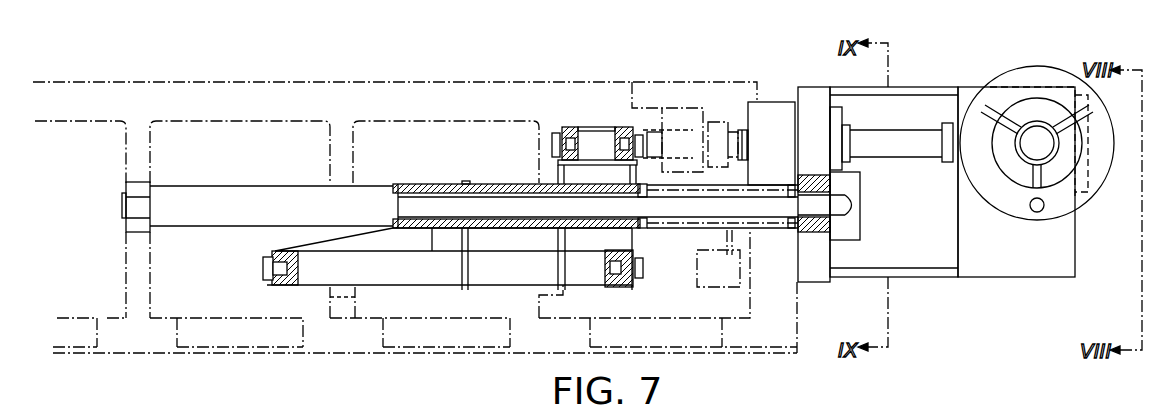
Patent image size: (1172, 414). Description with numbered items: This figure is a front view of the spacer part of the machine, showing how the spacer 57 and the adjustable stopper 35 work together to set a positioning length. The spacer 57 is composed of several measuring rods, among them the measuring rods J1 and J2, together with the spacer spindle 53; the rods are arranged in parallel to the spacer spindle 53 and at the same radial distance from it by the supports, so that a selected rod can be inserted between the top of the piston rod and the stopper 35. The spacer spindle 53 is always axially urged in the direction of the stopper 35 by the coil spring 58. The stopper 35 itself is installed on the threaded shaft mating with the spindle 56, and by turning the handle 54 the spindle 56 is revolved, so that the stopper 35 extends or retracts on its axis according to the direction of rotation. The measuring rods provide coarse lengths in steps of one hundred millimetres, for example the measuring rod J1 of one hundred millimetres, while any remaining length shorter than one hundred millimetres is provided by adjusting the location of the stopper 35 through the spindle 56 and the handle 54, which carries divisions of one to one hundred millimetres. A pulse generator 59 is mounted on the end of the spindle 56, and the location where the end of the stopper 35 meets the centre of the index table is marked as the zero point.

The stopper 35 is at (740, 130).
The spacer spindle 53 is at (660, 212).
The handle 54 is at (1036, 78).
The spindle 56 is at (902, 147).
The spacer 57 is at (593, 118).
The coil spring 58 is at (755, 223).
The pulse generator 59 is at (778, 108).
The measuring rod J1 is at (597, 127).
The measuring rod J2 is at (588, 275).